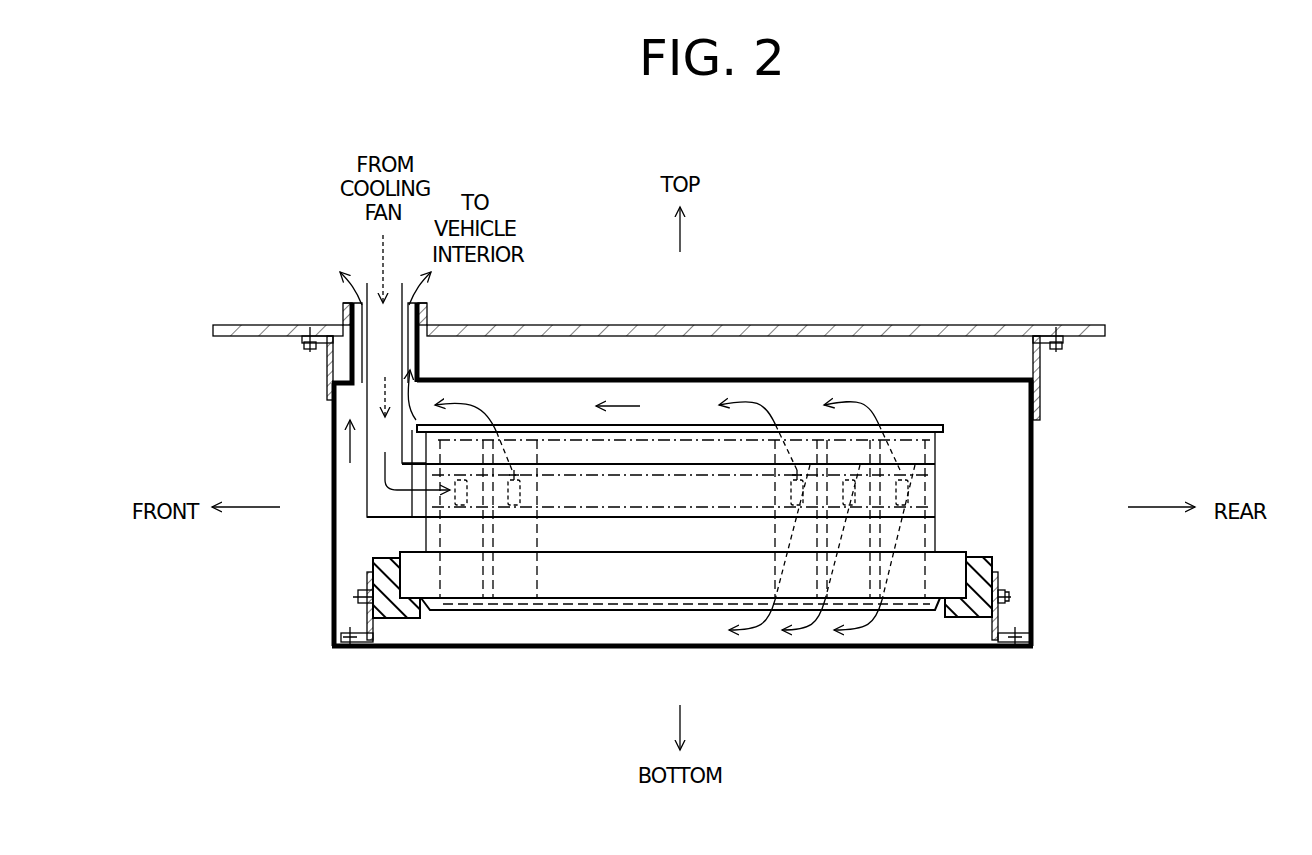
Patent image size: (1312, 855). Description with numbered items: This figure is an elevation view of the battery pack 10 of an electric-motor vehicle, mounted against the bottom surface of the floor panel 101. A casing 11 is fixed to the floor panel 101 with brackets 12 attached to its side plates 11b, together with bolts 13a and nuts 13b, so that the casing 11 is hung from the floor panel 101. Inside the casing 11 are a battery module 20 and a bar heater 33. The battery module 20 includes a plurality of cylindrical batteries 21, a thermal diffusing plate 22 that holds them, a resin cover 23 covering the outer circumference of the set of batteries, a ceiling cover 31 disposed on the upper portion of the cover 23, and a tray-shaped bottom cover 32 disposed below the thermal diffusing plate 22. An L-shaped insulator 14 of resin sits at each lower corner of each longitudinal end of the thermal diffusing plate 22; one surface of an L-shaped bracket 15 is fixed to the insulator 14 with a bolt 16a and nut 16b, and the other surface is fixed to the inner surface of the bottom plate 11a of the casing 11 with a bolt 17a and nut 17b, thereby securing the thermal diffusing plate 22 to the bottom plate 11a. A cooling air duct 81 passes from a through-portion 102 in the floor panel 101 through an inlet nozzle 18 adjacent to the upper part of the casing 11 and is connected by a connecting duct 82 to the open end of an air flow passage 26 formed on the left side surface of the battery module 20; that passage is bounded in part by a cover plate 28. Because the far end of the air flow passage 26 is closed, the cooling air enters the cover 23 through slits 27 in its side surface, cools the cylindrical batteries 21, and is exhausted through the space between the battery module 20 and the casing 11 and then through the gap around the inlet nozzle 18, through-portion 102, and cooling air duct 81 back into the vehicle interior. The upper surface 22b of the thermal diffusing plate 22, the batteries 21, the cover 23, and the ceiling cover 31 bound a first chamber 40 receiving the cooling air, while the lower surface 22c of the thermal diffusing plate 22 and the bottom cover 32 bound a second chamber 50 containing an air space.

The battery pack 10 is at (1060, 228).
The floor panel 101 is at (1085, 323).
The through-portion 102 is at (343, 316).
The casing 11 is at (672, 519).
The bottom plate 11a is at (963, 648).
The side plates 11b is at (1035, 468).
The brackets 12 is at (1041, 400).
The bolts 13a is at (1058, 350).
The nuts 13b is at (1068, 343).
The L-shaped insulator 14 is at (994, 562).
The L-shaped bracket 15 is at (999, 574).
The bolt 16a is at (1007, 603).
The nut 16b is at (1007, 594).
The bolt 17a is at (1025, 636).
The nut 17b is at (1030, 642).
The inlet nozzle 18 is at (420, 358).
The battery module 20 is at (500, 412).
The cylindrical batteries 21 is at (937, 487).
The thermal diffusing plate 22 is at (622, 565).
The upper surface 22b is at (408, 548).
The lower surface 22c is at (627, 598).
The cover 23 is at (937, 450).
The air flow passage 26 is at (752, 490).
The slits 27 is at (795, 612).
The cover plate 28 is at (693, 518).
The ceiling cover 31 is at (920, 428).
The bottom cover 32 is at (438, 612).
The bar heater 33 is at (517, 611).
The first chamber 40 is at (610, 533).
The second chamber 50 is at (905, 600).
The cooling air duct 81 is at (370, 283).
The connecting duct 82 is at (410, 460).